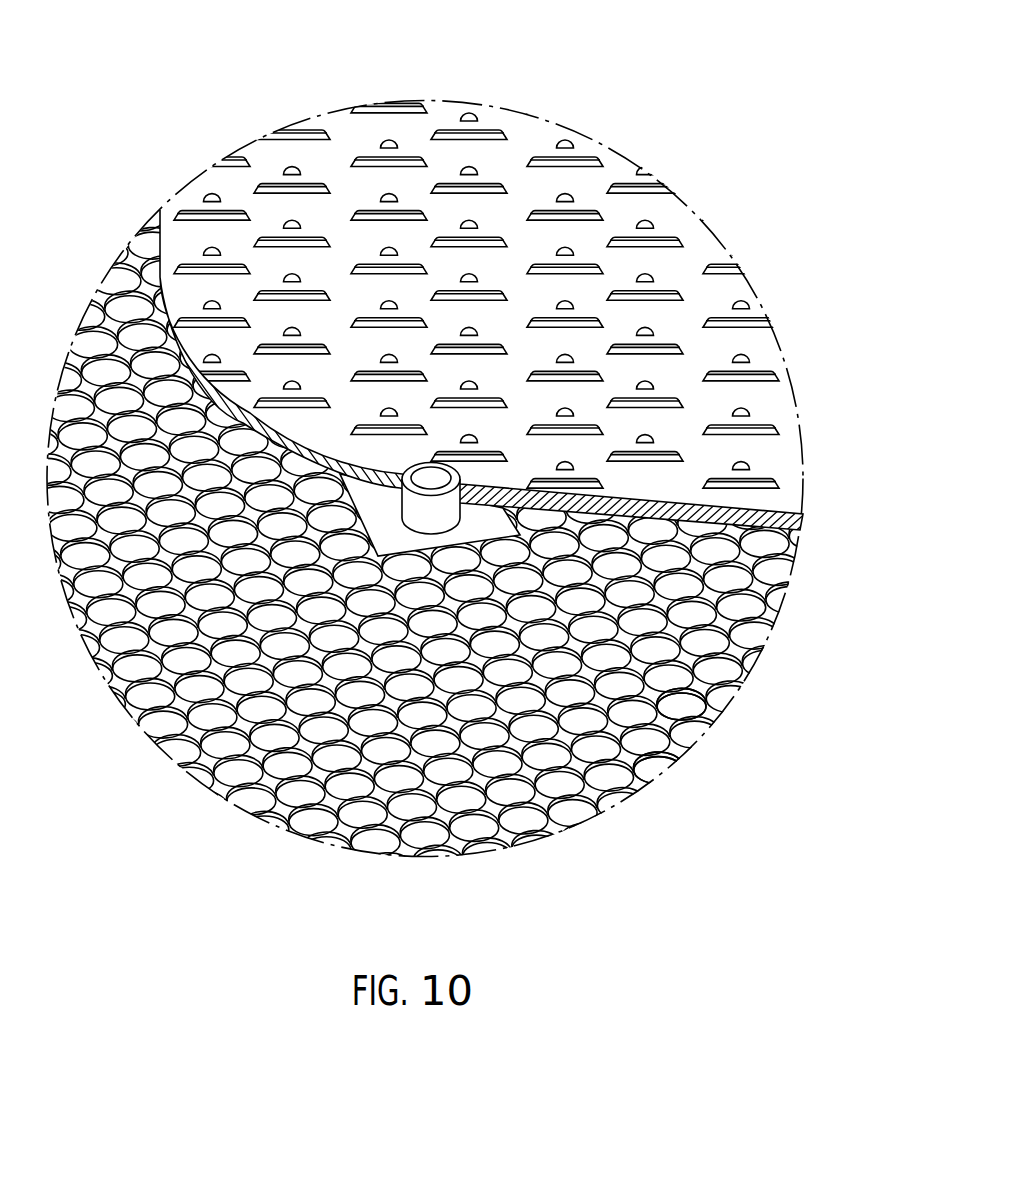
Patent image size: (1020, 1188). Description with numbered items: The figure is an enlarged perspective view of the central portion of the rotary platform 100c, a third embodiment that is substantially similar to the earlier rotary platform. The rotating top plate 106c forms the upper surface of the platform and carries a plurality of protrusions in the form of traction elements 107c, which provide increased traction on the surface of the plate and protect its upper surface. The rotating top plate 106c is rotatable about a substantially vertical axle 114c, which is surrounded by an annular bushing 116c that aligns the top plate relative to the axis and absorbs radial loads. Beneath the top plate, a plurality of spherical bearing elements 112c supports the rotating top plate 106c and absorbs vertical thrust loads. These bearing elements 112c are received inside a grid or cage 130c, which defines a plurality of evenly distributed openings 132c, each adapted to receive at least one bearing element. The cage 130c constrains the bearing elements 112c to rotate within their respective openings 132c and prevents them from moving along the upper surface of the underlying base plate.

The rotary platform 100c is at (707, 132).
The rotating top plate 106c is at (530, 142).
The traction element 107c is at (662, 296).
The bearing element 112c is at (615, 782).
The axle 114c is at (427, 473).
The bushing 116c is at (413, 512).
The cage 130c is at (703, 690).
The opening 132c is at (677, 758).